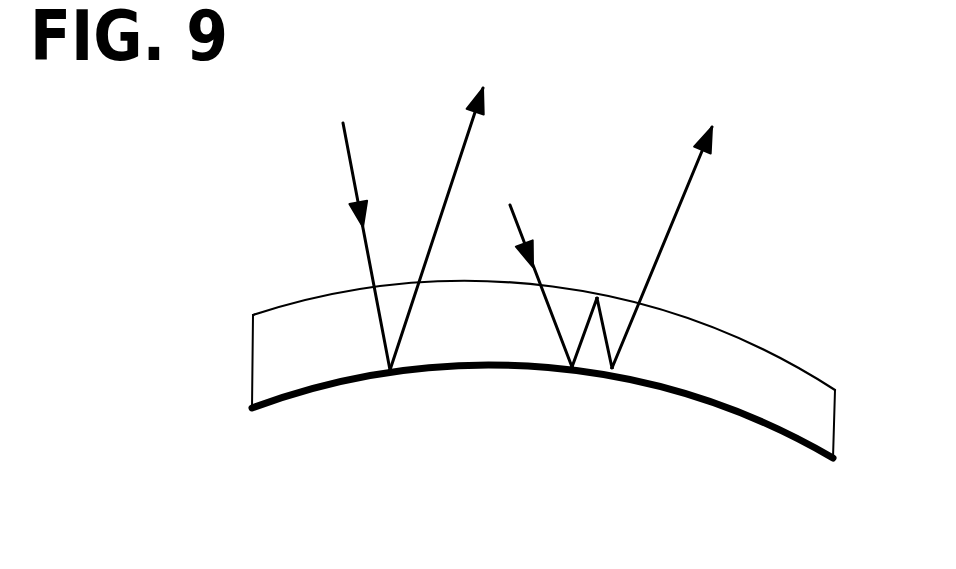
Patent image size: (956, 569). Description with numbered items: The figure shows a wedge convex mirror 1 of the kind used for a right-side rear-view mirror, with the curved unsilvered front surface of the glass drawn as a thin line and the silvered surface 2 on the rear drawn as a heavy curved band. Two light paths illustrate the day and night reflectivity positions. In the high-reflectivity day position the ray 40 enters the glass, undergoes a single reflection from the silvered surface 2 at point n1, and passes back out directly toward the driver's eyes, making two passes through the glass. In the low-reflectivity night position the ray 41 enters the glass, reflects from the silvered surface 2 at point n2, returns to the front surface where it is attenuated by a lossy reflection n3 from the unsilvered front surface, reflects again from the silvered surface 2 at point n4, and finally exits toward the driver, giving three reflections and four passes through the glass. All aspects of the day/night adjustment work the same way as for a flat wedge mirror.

The wedge convex mirror 1 is at (763, 348).
The silvered surface 2 is at (773, 430).
The ray in high-reflectivity day position 40 is at (350, 165).
The ray in low-reflectivity night position 41 is at (688, 188).
The reflection point n1 is at (390, 373).
The reflection point n2 is at (572, 370).
The lossy reflection from unsilvered front surface n3 is at (593, 295).
The reflection point n4 is at (612, 370).